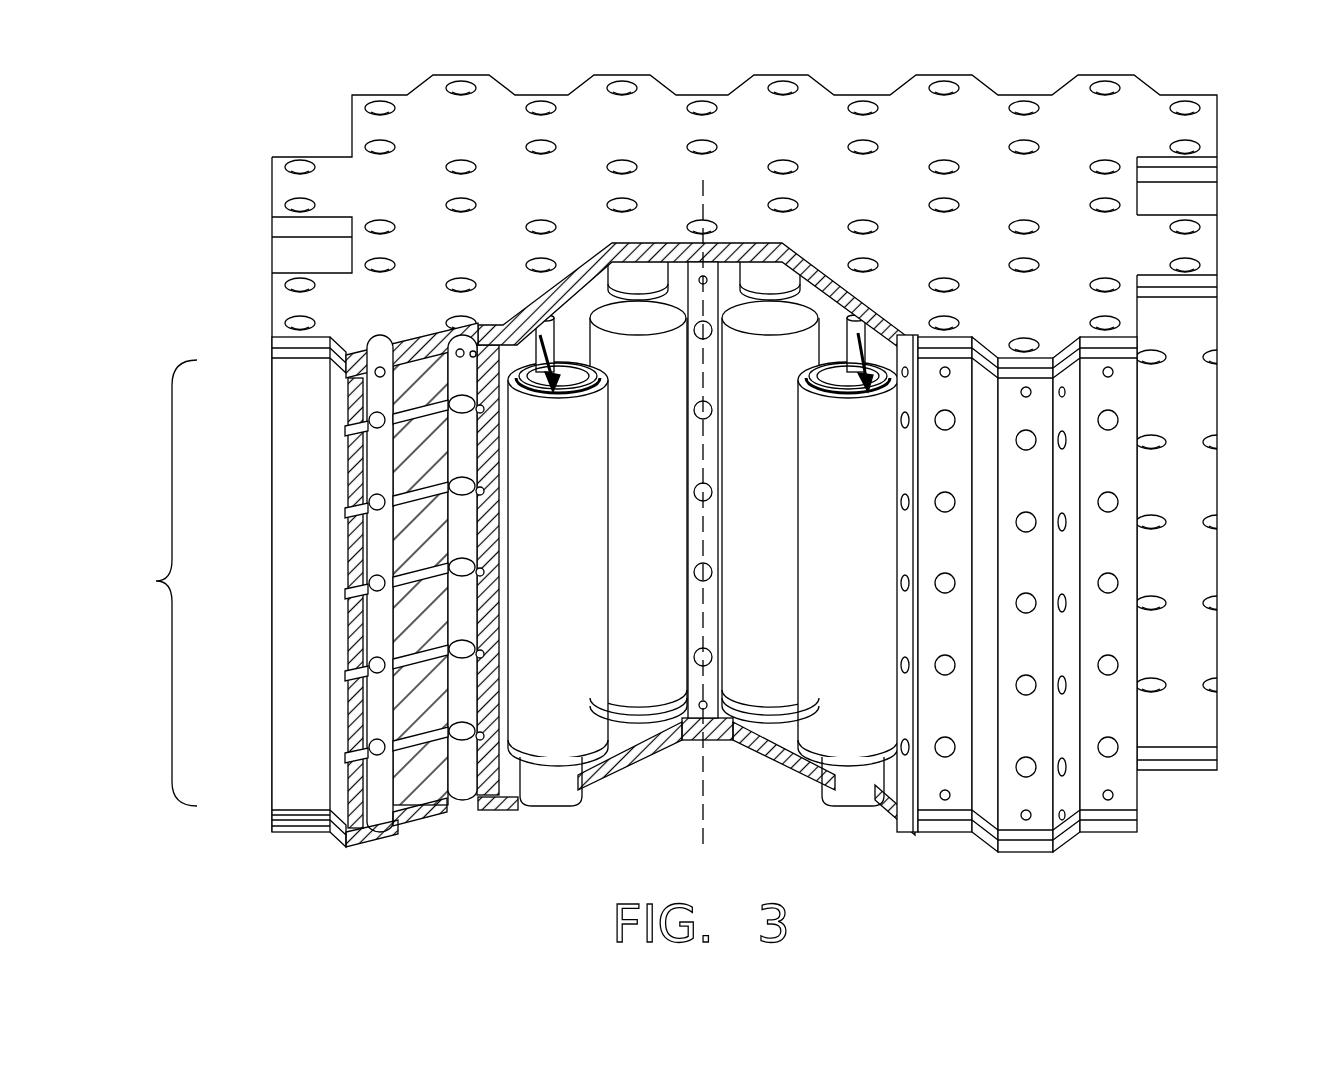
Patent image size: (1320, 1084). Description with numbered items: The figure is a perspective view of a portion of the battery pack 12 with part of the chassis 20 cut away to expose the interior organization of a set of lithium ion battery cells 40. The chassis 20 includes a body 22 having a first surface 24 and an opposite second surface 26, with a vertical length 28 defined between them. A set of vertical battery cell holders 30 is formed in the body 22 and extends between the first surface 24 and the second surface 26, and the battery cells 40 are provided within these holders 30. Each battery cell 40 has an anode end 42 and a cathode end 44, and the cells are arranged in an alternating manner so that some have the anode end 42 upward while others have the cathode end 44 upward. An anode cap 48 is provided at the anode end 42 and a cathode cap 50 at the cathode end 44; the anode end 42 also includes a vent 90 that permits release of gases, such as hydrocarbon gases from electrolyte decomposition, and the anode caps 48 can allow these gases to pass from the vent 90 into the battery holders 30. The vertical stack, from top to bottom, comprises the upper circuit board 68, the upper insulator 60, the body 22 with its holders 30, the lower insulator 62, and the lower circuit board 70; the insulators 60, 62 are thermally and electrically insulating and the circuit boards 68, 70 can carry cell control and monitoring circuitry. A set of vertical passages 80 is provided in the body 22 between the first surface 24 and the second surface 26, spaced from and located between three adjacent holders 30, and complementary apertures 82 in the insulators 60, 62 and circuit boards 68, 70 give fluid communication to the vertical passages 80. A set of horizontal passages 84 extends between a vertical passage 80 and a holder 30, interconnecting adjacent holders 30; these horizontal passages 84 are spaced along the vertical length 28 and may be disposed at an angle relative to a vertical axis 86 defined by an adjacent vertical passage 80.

The battery pack 12 is at (262, 176).
The chassis 20 is at (262, 542).
The body 22 is at (355, 458).
The first surface 24 is at (417, 347).
The second surface 26 is at (418, 828).
The vertical length 28 is at (156, 581).
The vertical battery cell holders 30 is at (514, 716).
The battery cells 40 is at (622, 742).
The anode end 42 is at (542, 318).
The cathode end 44 is at (676, 318).
The anode cap 48 is at (672, 708).
The cathode cap 50 is at (632, 320).
The upper insulator 60 is at (1212, 293).
The lower insulator 62 is at (300, 816).
The upper circuit board 68 is at (1210, 240).
The lower circuit board 70 is at (284, 832).
The vertical passages 80 is at (1197, 100).
The complementary apertures 82 is at (474, 172).
The horizontal passages 84 is at (698, 488).
The vertical axis 86 is at (707, 178).
The vent 90 is at (568, 367).